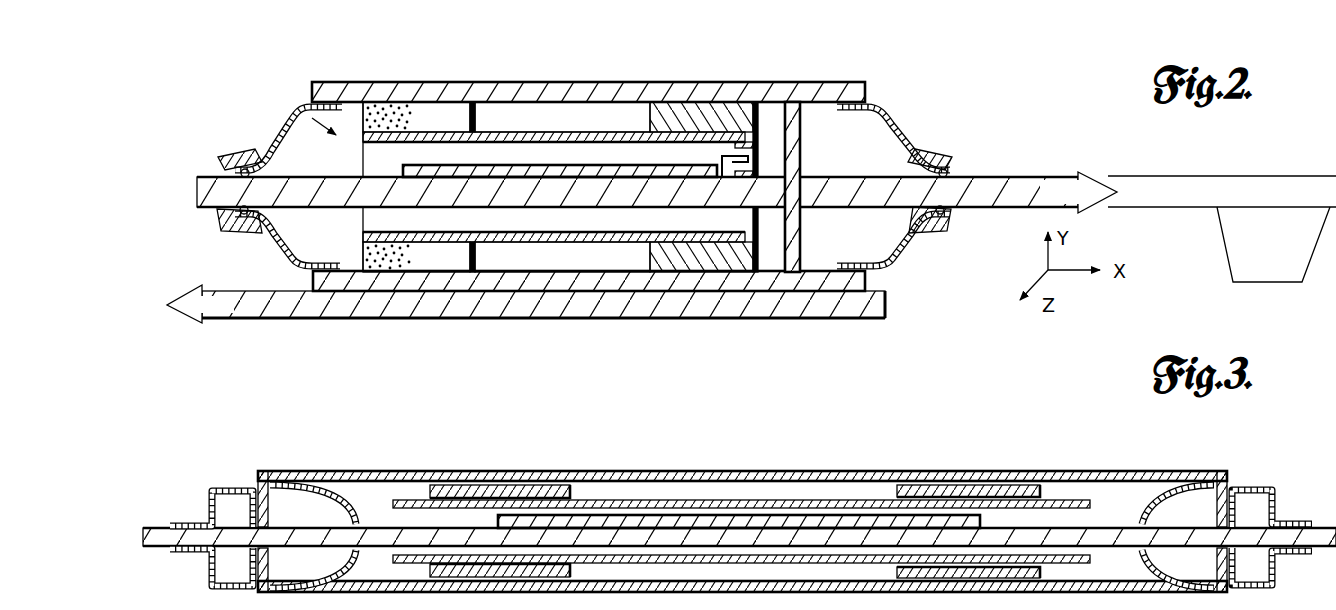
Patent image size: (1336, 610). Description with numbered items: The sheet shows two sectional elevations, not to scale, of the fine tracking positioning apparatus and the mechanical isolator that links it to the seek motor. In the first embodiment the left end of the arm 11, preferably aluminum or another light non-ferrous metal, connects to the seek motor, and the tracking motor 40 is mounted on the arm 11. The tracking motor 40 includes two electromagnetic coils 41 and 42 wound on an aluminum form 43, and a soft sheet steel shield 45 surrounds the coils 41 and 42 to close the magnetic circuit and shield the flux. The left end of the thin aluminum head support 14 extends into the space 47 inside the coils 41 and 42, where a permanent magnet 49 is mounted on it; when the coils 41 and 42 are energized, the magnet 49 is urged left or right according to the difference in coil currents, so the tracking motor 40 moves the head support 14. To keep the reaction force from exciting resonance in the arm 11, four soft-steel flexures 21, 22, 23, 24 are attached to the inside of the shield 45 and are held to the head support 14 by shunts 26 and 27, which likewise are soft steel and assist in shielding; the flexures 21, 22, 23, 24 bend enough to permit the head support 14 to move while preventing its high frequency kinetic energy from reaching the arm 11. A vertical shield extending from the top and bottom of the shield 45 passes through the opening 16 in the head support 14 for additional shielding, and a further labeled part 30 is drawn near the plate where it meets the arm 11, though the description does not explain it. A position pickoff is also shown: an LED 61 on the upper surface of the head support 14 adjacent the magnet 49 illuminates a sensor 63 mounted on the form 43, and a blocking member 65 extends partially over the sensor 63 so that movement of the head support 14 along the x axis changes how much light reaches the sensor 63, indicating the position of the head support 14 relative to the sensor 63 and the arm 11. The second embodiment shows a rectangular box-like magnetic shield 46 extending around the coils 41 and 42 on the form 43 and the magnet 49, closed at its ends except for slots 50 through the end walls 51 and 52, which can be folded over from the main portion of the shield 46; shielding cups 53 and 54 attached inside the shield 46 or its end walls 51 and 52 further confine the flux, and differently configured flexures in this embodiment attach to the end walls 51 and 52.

In FIG. 2, the arm 11 is at (397, 320).
In FIG. 2, the head support 14 is at (1015, 176).
In FIG. 3, the head support 14 is at (1080, 471).
In FIG. 2, the opening 16 is at (777, 210).
In FIG. 2, the flexure 21 is at (278, 130).
In FIG. 3, the flexure 21 is at (215, 486).
In FIG. 2, the flexure 22 is at (300, 262).
In FIG. 3, the flexure 22 is at (212, 583).
In FIG. 2, the flexure 23 is at (897, 130).
In FIG. 3, the flexure 23 is at (1275, 502).
In FIG. 2, the flexure 24 is at (893, 262).
In FIG. 3, the flexure 24 is at (1277, 572).
In FIG. 2, the shunt 26 is at (228, 155).
In FIG. 2, the shunt 27 is at (937, 150).
In FIG. 2, the mounting connection 30 is at (800, 248).
In FIG. 2, the tracking motor 40 is at (288, 118).
In FIG. 2, the electromagnetic coil 41 is at (430, 115).
In FIG. 3, the electromagnetic coil 41 is at (548, 487).
In FIG. 2, the electromagnetic coil 42 is at (670, 118).
In FIG. 3, the electromagnetic coil 42 is at (932, 485).
In FIG. 2, the form 43 is at (535, 135).
In FIG. 3, the form 43 is at (767, 499).
In FIG. 2, the shield 45 is at (730, 95).
In FIG. 3, the magnetic shield 46 is at (418, 472).
In FIG. 2, the space 47 is at (387, 220).
In FIG. 2, the permanent magnet 49 is at (625, 165).
In FIG. 3, the permanent magnet 49 is at (618, 515).
In FIG. 3, the slot 50 is at (285, 490).
In FIG. 3, the end wall 51 is at (260, 471).
In FIG. 3, the end wall 52 is at (1230, 478).
In FIG. 3, the shielding cup 53 is at (353, 486).
In FIG. 3, the shielding cup 54 is at (1138, 506).
In FIG. 2, the LED 61 is at (801, 147).
In FIG. 2, the sensor 63 is at (775, 125).
In FIG. 2, the blocking member 65 is at (717, 150).